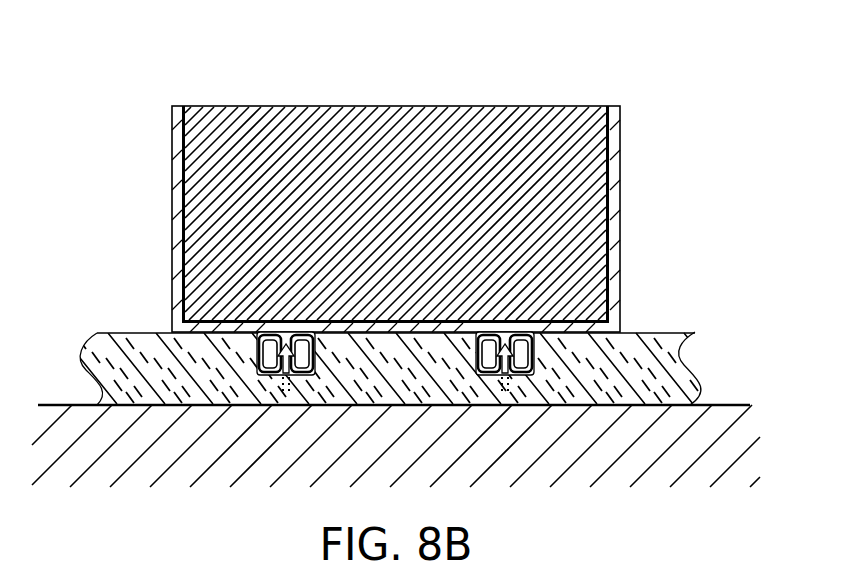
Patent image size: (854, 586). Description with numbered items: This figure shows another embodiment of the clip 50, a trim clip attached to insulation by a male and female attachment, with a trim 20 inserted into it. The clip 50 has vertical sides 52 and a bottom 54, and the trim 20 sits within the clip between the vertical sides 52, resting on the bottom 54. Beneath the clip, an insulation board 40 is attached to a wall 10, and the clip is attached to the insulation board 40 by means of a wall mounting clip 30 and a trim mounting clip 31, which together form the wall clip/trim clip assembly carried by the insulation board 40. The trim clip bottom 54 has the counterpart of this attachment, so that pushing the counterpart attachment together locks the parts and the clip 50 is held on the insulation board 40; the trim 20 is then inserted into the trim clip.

The wall 10 is at (733, 405).
The trim 20 is at (538, 106).
The wall mounting clip 30 is at (303, 343).
The trim mounting clip 31 is at (276, 355).
The insulation board 40 is at (660, 332).
The clip 50 is at (656, 114).
The vertical sides 52 is at (172, 188).
The bottom 54 is at (568, 322).